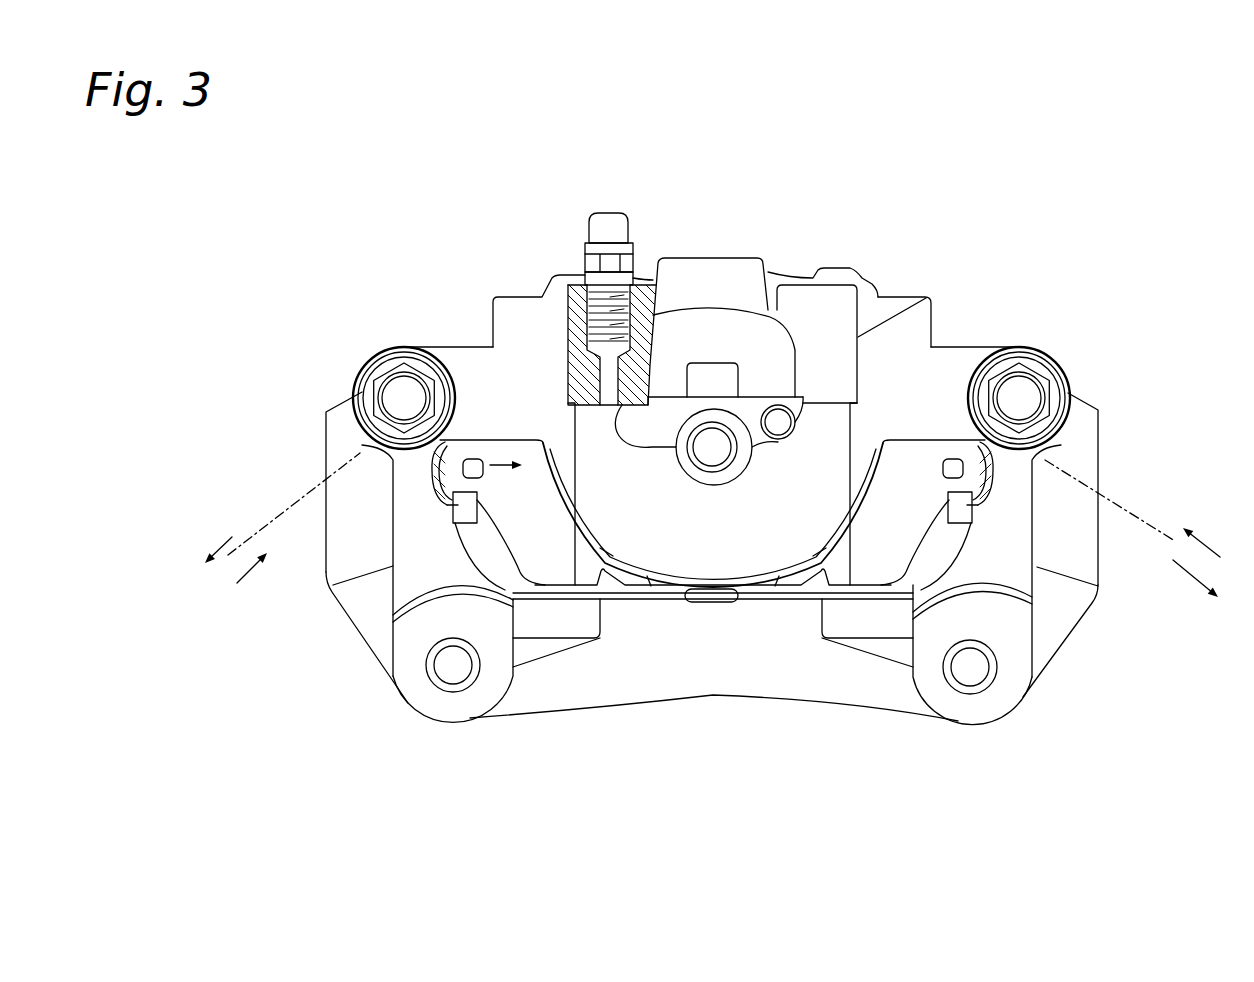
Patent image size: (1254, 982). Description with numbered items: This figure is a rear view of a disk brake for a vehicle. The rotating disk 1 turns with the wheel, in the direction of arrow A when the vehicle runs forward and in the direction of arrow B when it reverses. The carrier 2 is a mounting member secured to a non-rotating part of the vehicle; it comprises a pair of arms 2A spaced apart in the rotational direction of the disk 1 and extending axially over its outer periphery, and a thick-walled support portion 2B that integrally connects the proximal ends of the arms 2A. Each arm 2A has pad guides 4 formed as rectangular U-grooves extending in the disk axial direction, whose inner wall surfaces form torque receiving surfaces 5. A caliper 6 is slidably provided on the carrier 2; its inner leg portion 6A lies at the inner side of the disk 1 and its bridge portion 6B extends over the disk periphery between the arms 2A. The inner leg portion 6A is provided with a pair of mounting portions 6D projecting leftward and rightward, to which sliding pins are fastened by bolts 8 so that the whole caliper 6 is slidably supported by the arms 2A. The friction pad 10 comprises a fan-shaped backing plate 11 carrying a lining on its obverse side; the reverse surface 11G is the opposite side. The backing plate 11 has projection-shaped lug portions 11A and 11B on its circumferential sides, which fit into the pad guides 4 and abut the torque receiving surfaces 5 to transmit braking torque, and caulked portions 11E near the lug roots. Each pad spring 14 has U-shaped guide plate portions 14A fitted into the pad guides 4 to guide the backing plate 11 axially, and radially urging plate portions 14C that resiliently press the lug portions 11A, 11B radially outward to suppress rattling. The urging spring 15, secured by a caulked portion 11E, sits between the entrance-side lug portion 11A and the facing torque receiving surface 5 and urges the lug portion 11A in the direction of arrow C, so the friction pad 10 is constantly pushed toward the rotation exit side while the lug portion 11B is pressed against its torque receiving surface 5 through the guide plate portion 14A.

The rotating disk 1 is at (1147, 517).
The carrier 2 is at (624, 716).
The arms 2A is at (343, 418).
The support portion 2B is at (716, 672).
The pad guides 4 is at (425, 460).
The torque receiving surfaces 5 is at (438, 504).
The caliper 6 is at (720, 243).
The inner leg portion 6A is at (673, 378).
The bridge portion 6B is at (825, 270).
The mounting portions 6D is at (457, 362).
The bolts 8 is at (405, 393).
The friction pad 10 is at (578, 598).
The backing plate 11 is at (862, 555).
The lug portion 11A is at (430, 473).
The lug portion 11B is at (975, 475).
The caulked portions 11E is at (482, 440).
The reverse surface 11G is at (504, 507).
The pad spring 14 is at (417, 487).
The guide plate portions 14A is at (385, 563).
The radially urging plate portions 14C is at (472, 525).
The urging spring 15 is at (463, 445).
The arrow A is at (727, 580).
The arrow B is at (712, 537).
The arrow C is at (514, 477).